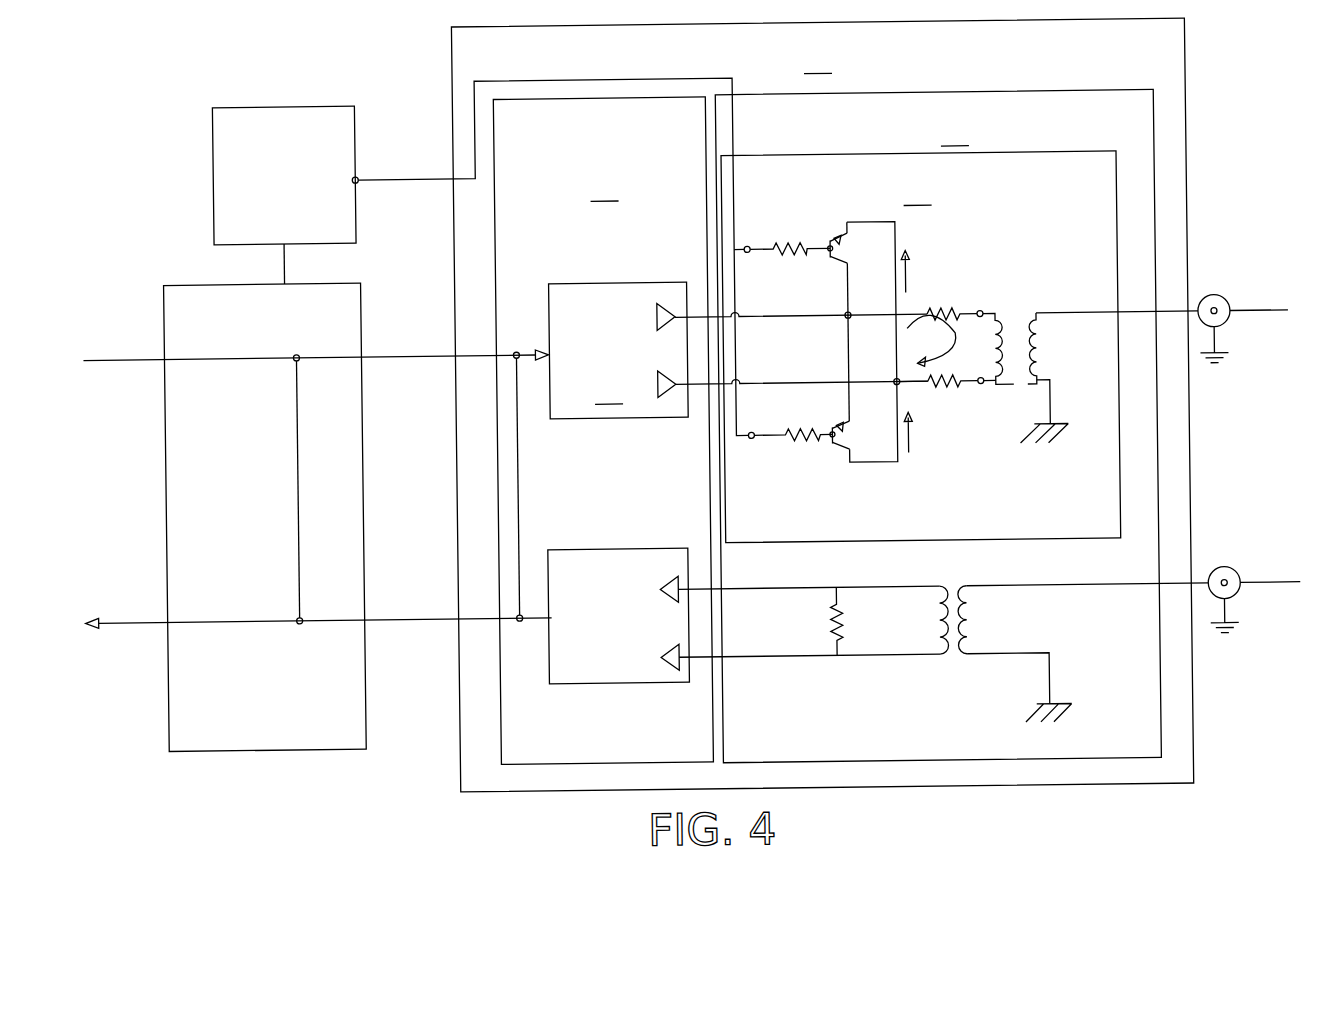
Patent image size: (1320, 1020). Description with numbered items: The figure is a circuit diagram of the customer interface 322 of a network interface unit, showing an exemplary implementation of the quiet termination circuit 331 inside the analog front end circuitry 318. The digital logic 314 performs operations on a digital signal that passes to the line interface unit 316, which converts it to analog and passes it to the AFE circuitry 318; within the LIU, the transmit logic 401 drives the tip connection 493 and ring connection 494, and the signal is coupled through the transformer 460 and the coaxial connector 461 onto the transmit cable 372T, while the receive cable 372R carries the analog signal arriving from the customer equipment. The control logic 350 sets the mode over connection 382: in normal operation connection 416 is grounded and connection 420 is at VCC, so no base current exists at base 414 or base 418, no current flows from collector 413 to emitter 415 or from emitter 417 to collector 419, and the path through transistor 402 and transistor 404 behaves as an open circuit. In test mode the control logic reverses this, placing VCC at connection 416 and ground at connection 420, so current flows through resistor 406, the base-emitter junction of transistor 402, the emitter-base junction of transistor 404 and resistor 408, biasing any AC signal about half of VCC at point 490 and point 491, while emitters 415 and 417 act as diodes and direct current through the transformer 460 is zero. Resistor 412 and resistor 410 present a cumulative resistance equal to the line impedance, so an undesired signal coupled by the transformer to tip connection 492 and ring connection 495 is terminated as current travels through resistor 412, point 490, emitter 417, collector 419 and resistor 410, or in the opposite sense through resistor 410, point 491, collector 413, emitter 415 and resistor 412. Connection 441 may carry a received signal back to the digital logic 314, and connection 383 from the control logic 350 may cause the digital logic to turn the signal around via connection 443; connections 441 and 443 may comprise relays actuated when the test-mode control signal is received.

The customer interface 322 is at (830, 405).
The control logic 350 is at (284, 175).
The connection 382 is at (412, 176).
The connection 383 is at (286, 278).
The digital logic 314 is at (265, 517).
The line interface unit 316 is at (603, 431).
The analog front end circuitry 318 is at (941, 426).
The quiet termination circuit 331 is at (897, 347).
The transmit logic 401 is at (619, 350).
The connection 441 is at (518, 494).
The connection 443 is at (299, 484).
The resistor 406 is at (791, 247).
The resistor 408 is at (791, 436).
The transistor 402 is at (847, 258).
The transistor 404 is at (851, 440).
The collector 413 is at (844, 239).
The base 414 is at (828, 252).
The emitter 415 is at (840, 264).
The connection 416 is at (750, 255).
The emitter 417 is at (846, 423).
The base 418 is at (829, 440).
The collector 419 is at (845, 452).
The connection 420 is at (753, 438).
The point 490 is at (853, 315).
The point 491 is at (895, 382).
The tip connection 493 is at (811, 319).
The ring connection 494 is at (796, 386).
The resistor 412 is at (952, 323).
The resistor 410 is at (936, 383).
The tip connection 492 is at (981, 314).
The ring connection 495 is at (982, 388).
The transformer 460 is at (1022, 314).
The coaxial connector 461 is at (1215, 302).
The transmit cable 372T is at (1171, 321).
The receive cable 372R is at (1252, 587).